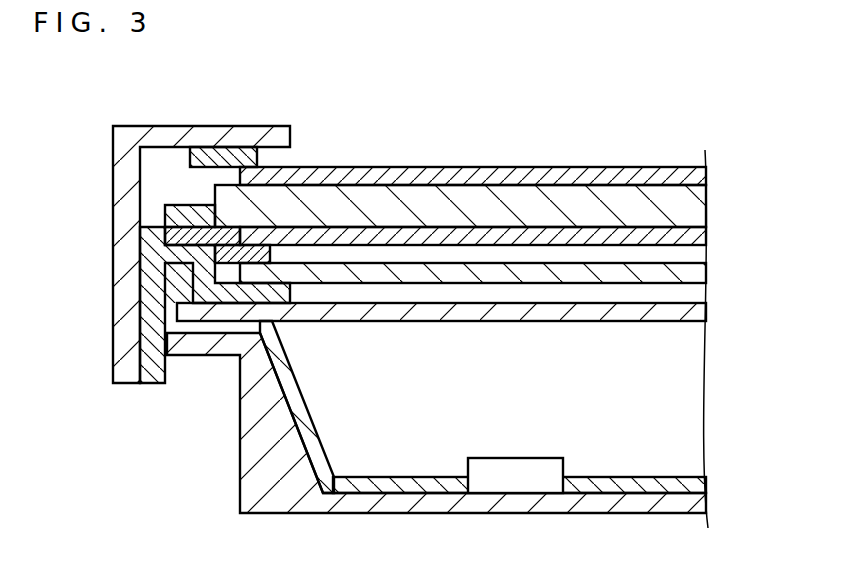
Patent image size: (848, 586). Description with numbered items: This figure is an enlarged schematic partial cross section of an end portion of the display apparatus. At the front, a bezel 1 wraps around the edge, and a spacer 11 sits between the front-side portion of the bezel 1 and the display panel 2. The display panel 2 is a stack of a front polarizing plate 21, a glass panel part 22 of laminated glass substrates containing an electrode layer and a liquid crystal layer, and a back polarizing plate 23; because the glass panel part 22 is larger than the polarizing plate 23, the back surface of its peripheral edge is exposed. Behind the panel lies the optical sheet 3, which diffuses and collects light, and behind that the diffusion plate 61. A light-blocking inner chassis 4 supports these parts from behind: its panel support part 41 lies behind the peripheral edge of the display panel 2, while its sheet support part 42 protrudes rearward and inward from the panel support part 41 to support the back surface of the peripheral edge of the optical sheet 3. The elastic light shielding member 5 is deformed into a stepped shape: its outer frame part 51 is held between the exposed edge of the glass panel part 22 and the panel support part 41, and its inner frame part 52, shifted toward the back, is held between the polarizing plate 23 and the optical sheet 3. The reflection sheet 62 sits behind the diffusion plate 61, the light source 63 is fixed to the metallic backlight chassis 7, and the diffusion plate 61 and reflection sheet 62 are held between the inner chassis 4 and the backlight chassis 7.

The bezel 1 is at (168, 133).
The spacer 11 is at (226, 153).
The display panel 2 is at (510, 210).
The polarizing plate 21 is at (698, 177).
The glass panel part 22 is at (693, 207).
The polarizing plate 23 is at (503, 244).
The optical sheet 3 is at (698, 275).
The inner chassis 4 is at (155, 383).
The panel support part 41 is at (187, 223).
The sheet support part 42 is at (243, 285).
The light shielding member 5 is at (145, 252).
The outer frame part 51 is at (182, 236).
The inner frame part 52 is at (236, 263).
The diffusion plate 61 is at (698, 313).
The reflection sheet 62 is at (690, 483).
The light source 63 is at (517, 483).
The backlight chassis 7 is at (650, 508).